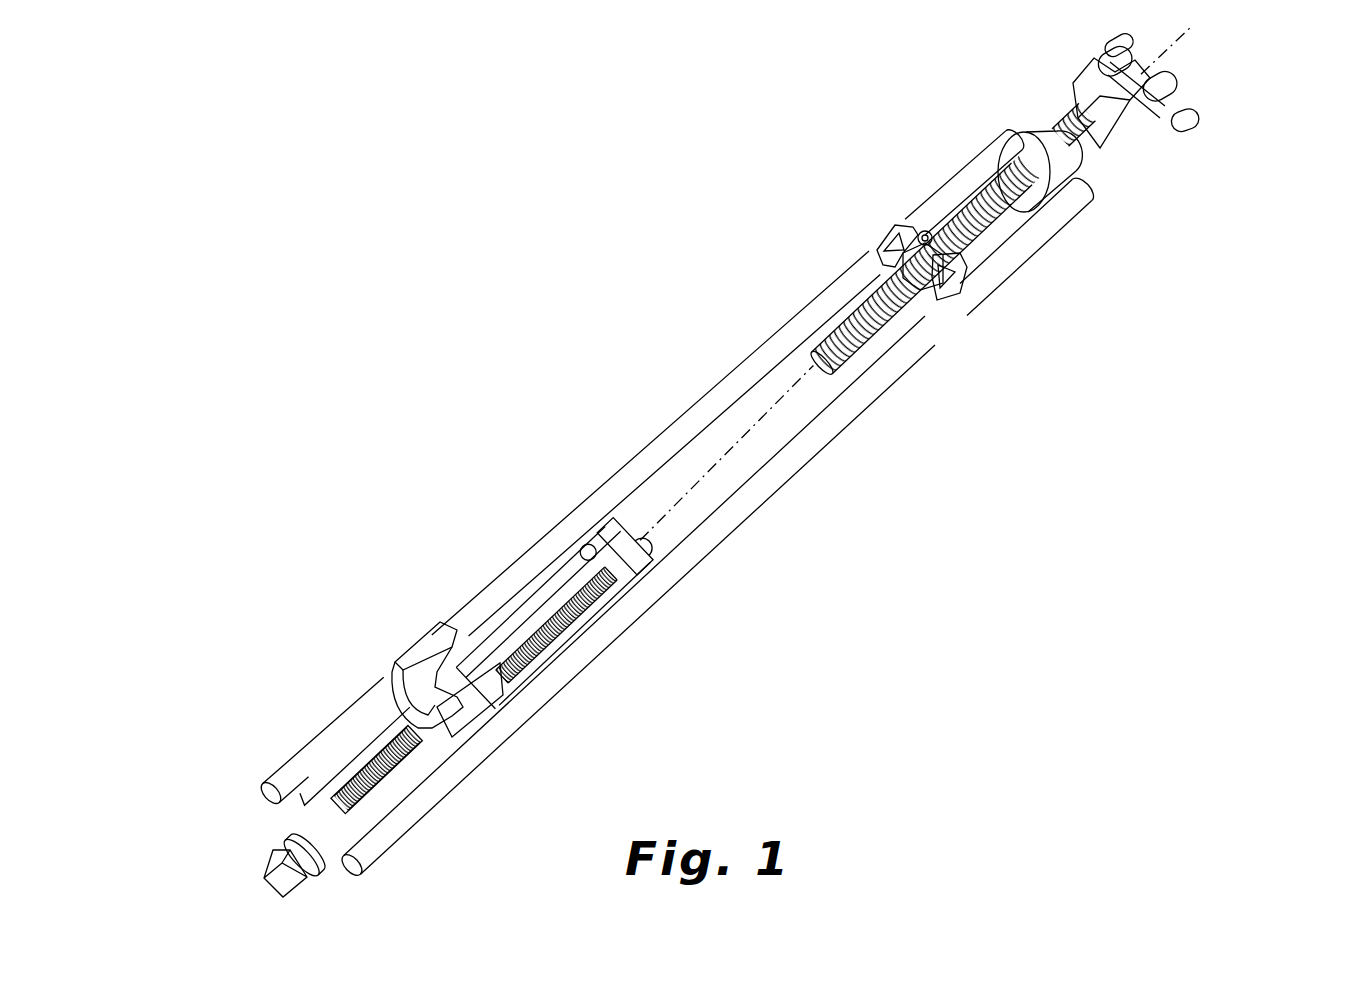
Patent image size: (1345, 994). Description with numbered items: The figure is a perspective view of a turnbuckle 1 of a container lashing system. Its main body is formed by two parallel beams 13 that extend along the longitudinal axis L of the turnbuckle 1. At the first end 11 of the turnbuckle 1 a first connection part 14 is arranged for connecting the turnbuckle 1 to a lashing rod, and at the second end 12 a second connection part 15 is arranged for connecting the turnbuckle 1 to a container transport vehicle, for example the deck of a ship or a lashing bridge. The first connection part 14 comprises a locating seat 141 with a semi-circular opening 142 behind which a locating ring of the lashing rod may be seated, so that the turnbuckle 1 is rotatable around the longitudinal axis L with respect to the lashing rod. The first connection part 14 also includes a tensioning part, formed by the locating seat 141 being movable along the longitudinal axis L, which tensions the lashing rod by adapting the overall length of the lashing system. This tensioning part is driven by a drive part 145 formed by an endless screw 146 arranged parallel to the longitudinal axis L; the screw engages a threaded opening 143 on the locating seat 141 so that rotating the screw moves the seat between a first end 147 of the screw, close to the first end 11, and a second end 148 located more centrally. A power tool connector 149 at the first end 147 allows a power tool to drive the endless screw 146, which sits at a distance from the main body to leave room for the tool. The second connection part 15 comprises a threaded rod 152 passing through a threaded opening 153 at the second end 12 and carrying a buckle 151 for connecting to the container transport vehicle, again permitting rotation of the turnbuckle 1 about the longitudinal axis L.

The turnbuckle 1 is at (488, 425).
The first end 11 is at (283, 810).
The second end 12 is at (1188, 112).
The parallel beams 13 is at (710, 405).
The first connection part 14 is at (455, 638).
The second connection part 15 is at (998, 239).
The locating seat 141 is at (433, 637).
The semi-circular opening 142 is at (427, 677).
The threaded opening 143 is at (423, 748).
The drive part 145 is at (548, 583).
The endless screw 146 is at (567, 632).
The first end of the endless screw 147 is at (280, 836).
The second end of the endless screw 148 is at (635, 535).
The power tool connector 149 is at (290, 870).
The buckle 151 is at (1137, 112).
The threaded rod 152 is at (1013, 217).
The threaded opening 153 is at (1003, 170).